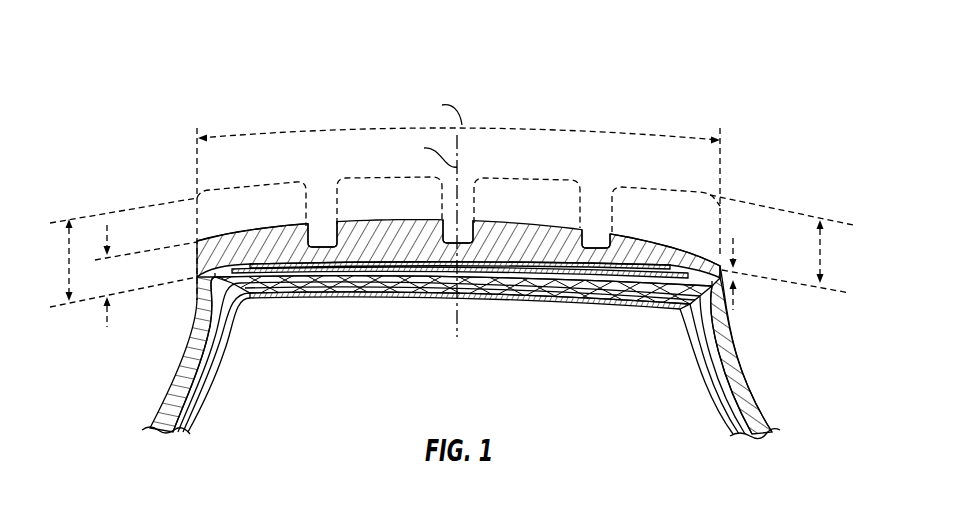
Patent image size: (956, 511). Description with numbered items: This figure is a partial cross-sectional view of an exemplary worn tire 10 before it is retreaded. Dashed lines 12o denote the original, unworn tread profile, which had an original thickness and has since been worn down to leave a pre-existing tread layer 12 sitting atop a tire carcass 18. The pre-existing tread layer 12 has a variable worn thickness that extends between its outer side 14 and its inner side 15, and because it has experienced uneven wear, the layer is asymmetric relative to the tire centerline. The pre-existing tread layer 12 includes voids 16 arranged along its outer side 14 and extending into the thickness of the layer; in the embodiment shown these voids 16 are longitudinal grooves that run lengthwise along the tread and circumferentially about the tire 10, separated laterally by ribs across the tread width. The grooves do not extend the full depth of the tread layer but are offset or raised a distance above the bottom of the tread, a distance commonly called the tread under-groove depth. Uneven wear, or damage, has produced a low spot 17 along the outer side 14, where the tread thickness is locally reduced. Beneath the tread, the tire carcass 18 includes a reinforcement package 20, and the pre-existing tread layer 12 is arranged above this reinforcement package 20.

The worn tire 10 is at (166, 63).
The pre-existing tread layer 12 is at (383, 250).
The original tread profile 12o is at (199, 196).
The outer side of the pre-existing tread layer 14 is at (255, 231).
The inner side of the pre-existing tread layer 15 is at (205, 296).
The voids 16 is at (317, 240).
The low spot 17 is at (707, 258).
The tire carcass 18 is at (755, 398).
The reinforcement package 20 is at (699, 298).